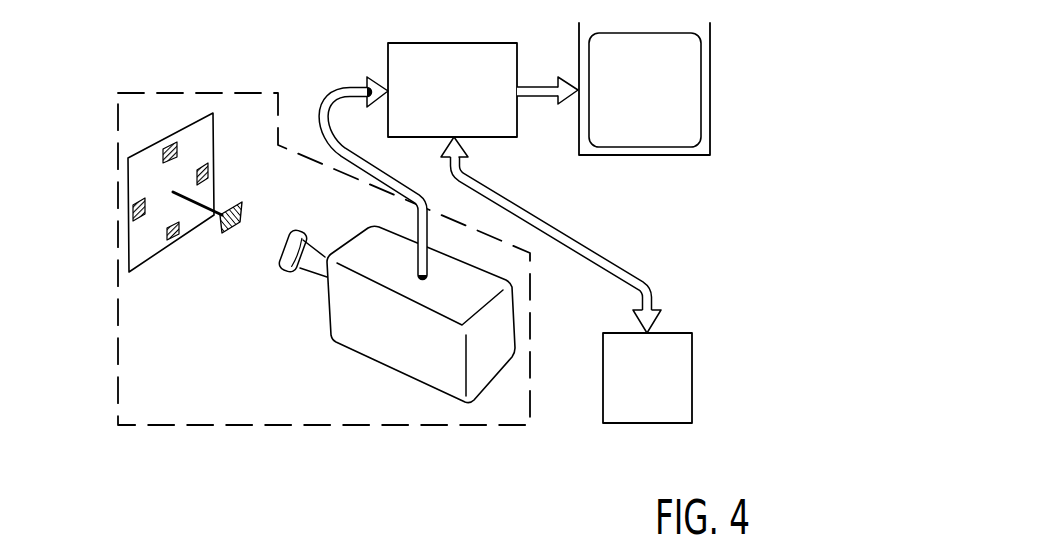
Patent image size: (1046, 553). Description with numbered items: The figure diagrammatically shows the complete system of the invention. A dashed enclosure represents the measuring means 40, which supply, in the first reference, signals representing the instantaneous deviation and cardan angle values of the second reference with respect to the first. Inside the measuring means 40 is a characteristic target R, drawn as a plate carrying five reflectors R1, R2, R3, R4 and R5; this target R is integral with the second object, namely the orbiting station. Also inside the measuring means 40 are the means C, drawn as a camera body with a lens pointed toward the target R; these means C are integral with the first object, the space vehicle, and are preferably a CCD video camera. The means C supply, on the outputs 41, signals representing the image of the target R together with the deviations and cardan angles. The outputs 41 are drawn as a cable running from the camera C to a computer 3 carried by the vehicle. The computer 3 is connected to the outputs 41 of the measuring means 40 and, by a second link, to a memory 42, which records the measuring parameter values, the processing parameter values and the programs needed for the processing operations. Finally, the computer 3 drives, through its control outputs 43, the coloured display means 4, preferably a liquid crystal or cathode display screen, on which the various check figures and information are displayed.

The target R is at (187, 127).
The reflector R1 is at (164, 147).
The reflector R2 is at (208, 167).
The reflector R3 is at (167, 228).
The reflector R4 is at (137, 204).
The reflector R5 is at (230, 235).
The measuring means 40 is at (118, 332).
The video camera C is at (323, 328).
The outputs 41 is at (323, 100).
The computer 3 is at (400, 58).
The control outputs 43 is at (535, 92).
The coloured display means 4 is at (687, 128).
The memory 42 is at (670, 364).